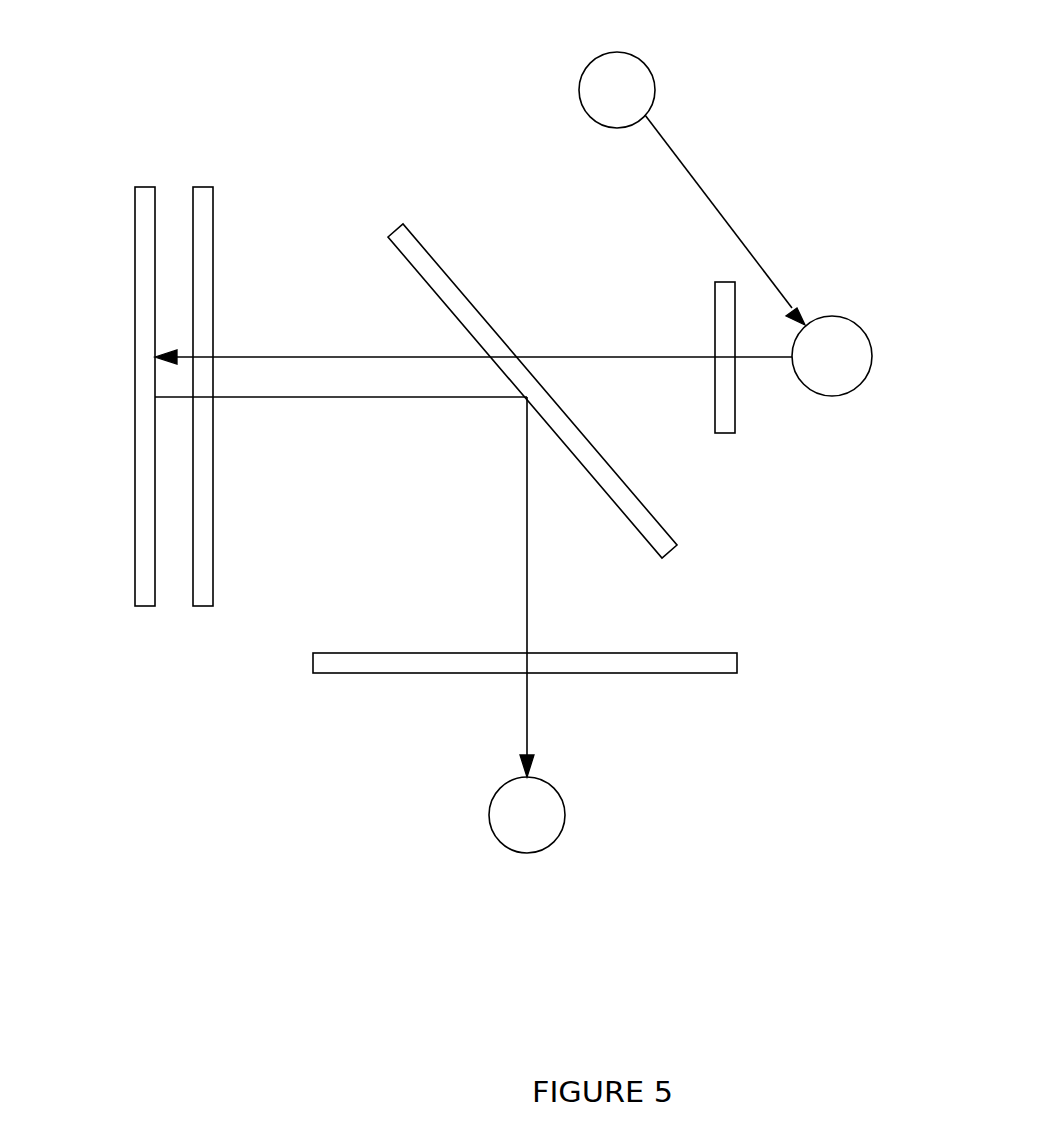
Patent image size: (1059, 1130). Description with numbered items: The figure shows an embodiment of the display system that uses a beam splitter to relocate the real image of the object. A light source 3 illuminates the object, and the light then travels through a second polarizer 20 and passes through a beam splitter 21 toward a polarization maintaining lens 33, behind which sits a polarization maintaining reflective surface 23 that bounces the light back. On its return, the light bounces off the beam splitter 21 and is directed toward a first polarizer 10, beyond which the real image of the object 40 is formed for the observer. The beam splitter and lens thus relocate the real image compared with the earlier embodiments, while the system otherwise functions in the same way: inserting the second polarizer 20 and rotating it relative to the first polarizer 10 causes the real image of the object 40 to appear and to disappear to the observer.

The light source 3 is at (632, 53).
The second polarizer 20 is at (730, 281).
The beam splitter 21 is at (567, 413).
The polarization maintaining reflective surface 23 is at (137, 545).
The polarization maintaining lens 33 is at (213, 550).
The first polarizer 10 is at (738, 663).
The real image of the object 40 is at (566, 808).